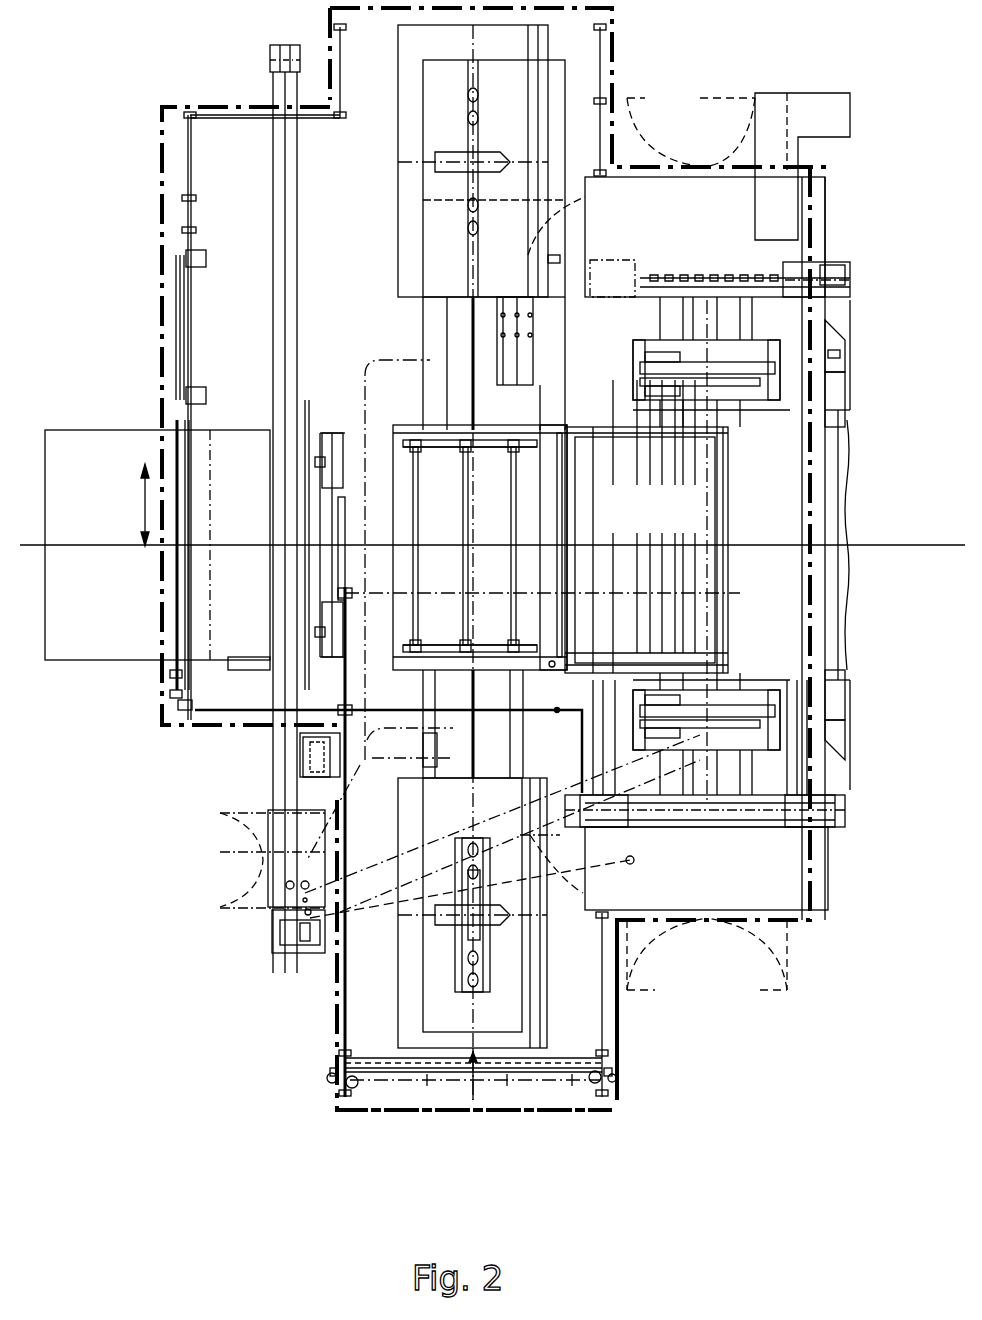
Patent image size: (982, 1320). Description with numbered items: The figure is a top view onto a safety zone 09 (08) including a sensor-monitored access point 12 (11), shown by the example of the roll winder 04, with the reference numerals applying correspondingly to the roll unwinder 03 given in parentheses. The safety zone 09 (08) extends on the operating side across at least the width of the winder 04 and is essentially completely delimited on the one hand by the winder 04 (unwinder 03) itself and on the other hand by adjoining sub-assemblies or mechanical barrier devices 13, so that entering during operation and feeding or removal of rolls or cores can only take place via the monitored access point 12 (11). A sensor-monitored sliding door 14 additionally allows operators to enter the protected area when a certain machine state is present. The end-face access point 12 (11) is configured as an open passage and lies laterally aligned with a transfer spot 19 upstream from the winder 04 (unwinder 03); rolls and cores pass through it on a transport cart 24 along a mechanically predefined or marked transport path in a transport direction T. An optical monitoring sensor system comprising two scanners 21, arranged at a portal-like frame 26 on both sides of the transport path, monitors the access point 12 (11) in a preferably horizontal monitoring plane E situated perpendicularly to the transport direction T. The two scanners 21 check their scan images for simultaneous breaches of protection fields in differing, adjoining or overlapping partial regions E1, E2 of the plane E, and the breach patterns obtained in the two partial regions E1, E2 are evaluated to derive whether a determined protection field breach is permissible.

The mechanical barrier device 13 is at (234, 116).
The sliding door 14 is at (177, 536).
The safety zone 09 is at (336, 253).
The safety zone 08 is at (386, 253).
The transfer spot 19 is at (504, 531).
The roll winder 04 is at (646, 518).
The roll unwinder 03 is at (697, 518).
The transport cart 24 is at (478, 838).
The portal-like frame 26 is at (570, 975).
The scanner 21 is at (350, 1093).
The partial region of the plane E1 is at (427, 1084).
The transport direction T is at (471, 1082).
The monitoring plane E is at (507, 1084).
The partial region of the plane E2 is at (572, 1084).
The access point 12 is at (540, 1122).
The access point 11 is at (595, 1065).